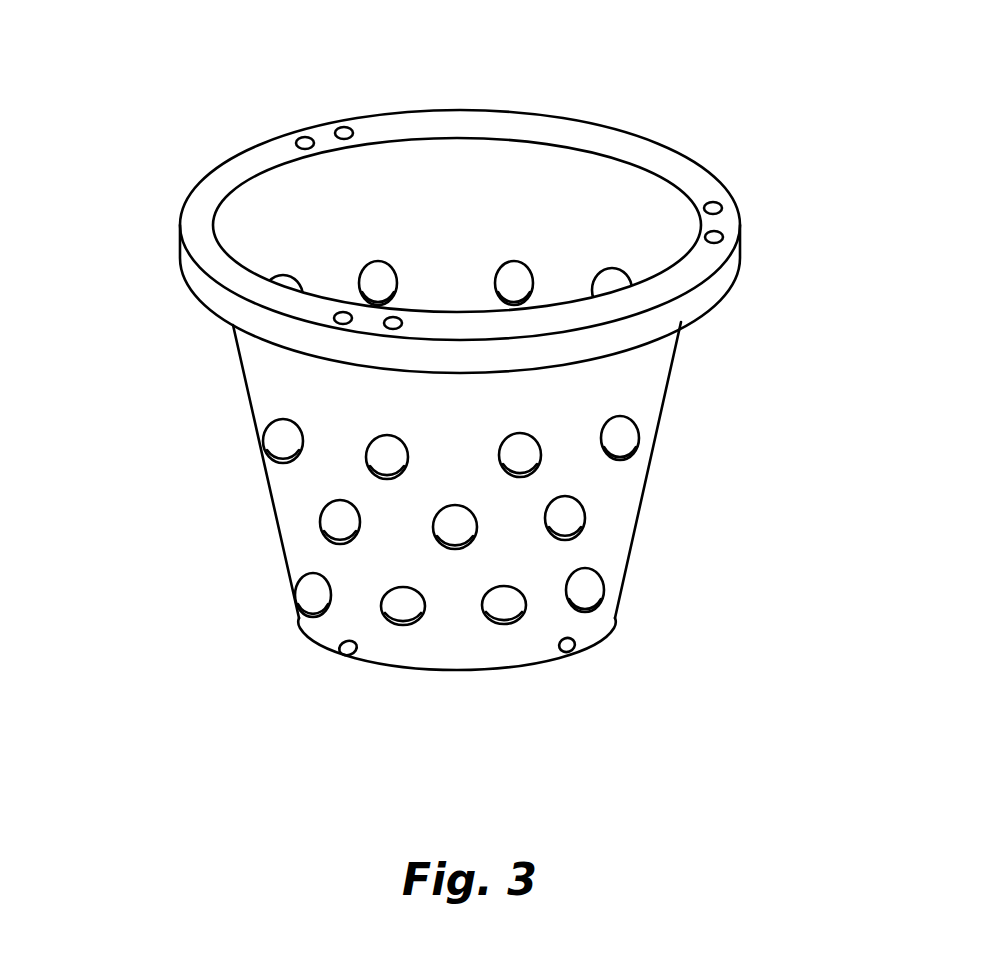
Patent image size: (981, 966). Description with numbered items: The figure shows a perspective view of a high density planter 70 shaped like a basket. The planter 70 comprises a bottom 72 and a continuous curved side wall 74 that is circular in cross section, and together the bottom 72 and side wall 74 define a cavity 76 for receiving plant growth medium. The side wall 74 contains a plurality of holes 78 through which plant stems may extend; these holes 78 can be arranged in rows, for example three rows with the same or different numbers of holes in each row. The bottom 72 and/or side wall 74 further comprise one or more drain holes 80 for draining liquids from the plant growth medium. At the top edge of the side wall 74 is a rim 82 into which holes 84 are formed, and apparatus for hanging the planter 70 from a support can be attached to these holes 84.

The planter 70 is at (800, 159).
The bottom 72 is at (470, 677).
The side wall 74 is at (645, 500).
The cavity 76 is at (500, 163).
The holes 78 is at (282, 436).
The drain holes 80 is at (331, 652).
The rim 82 is at (183, 243).
The holes 84 is at (345, 131).